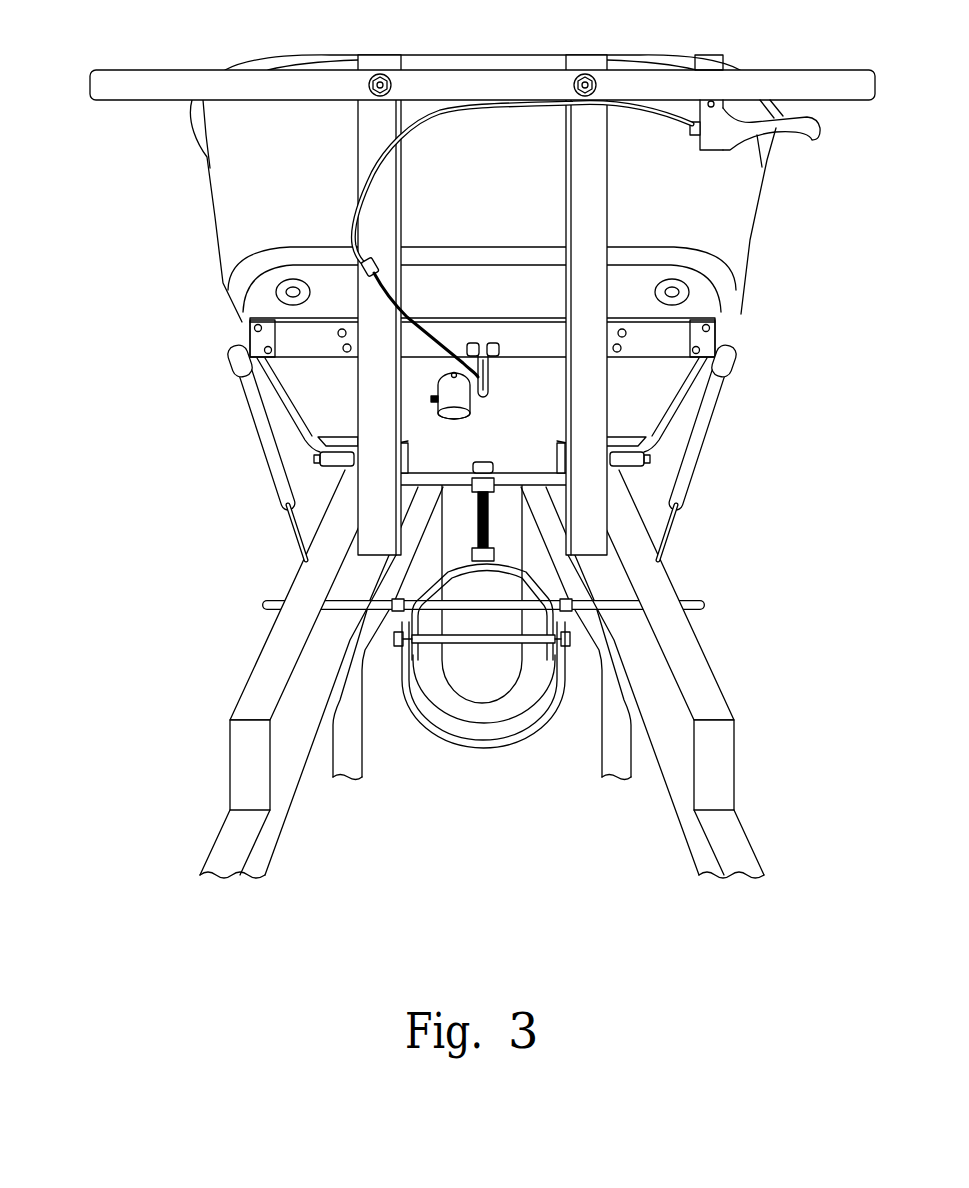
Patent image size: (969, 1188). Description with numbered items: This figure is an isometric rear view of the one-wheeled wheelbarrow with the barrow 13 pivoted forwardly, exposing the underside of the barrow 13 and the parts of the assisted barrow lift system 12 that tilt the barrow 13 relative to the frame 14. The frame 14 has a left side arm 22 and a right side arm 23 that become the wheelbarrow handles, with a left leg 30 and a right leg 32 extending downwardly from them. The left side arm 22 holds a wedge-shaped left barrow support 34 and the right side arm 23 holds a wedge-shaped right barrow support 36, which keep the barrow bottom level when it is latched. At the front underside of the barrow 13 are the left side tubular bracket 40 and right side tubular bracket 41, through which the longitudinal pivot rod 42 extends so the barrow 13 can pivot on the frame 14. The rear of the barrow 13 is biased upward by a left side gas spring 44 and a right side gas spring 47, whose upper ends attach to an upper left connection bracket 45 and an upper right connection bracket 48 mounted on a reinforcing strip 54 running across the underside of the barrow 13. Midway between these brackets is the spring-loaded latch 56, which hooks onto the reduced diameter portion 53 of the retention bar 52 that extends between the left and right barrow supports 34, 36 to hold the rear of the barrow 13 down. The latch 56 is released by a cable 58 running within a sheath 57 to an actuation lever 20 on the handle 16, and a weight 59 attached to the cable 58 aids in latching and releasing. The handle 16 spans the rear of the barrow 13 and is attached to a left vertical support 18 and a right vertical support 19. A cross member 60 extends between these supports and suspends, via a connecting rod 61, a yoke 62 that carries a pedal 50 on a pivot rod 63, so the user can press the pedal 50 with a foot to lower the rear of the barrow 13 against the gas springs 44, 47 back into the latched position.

The assisted barrow lift system 12 is at (148, 152).
The barrow 13 is at (224, 214).
The frame 14 is at (210, 578).
The handle 16 is at (141, 76).
The left vertical support 18 is at (370, 131).
The right vertical support 19 is at (590, 146).
The actuation lever 20 is at (716, 141).
The left side arm 22 is at (220, 824).
The right side arm 23 is at (742, 824).
The left leg 30 is at (346, 778).
The right leg 32 is at (623, 778).
The left barrow support 34 is at (243, 702).
The right barrow support 36 is at (715, 702).
The left side tubular bracket 40 is at (338, 437).
The right side tubular bracket 41 is at (630, 437).
The longitudinal pivot rod 42 is at (320, 460).
The left side gas spring 44 is at (250, 422).
The upper left connection bracket 45 is at (252, 340).
The right side gas spring 47 is at (712, 426).
The upper right connection bracket 48 is at (713, 340).
The pedal 50 is at (484, 746).
The retention bar 52 is at (692, 600).
The reduced diameter portion 53 is at (462, 607).
The reinforcing strip 54 is at (313, 333).
The latch 56 is at (492, 378).
The sheath 57 is at (442, 120).
The cable 58 is at (412, 318).
The weight 59 is at (455, 412).
The cross member 60 is at (530, 457).
The connecting rod 61 is at (490, 527).
The yoke 62 is at (466, 565).
The pivot rod 63 is at (485, 643).